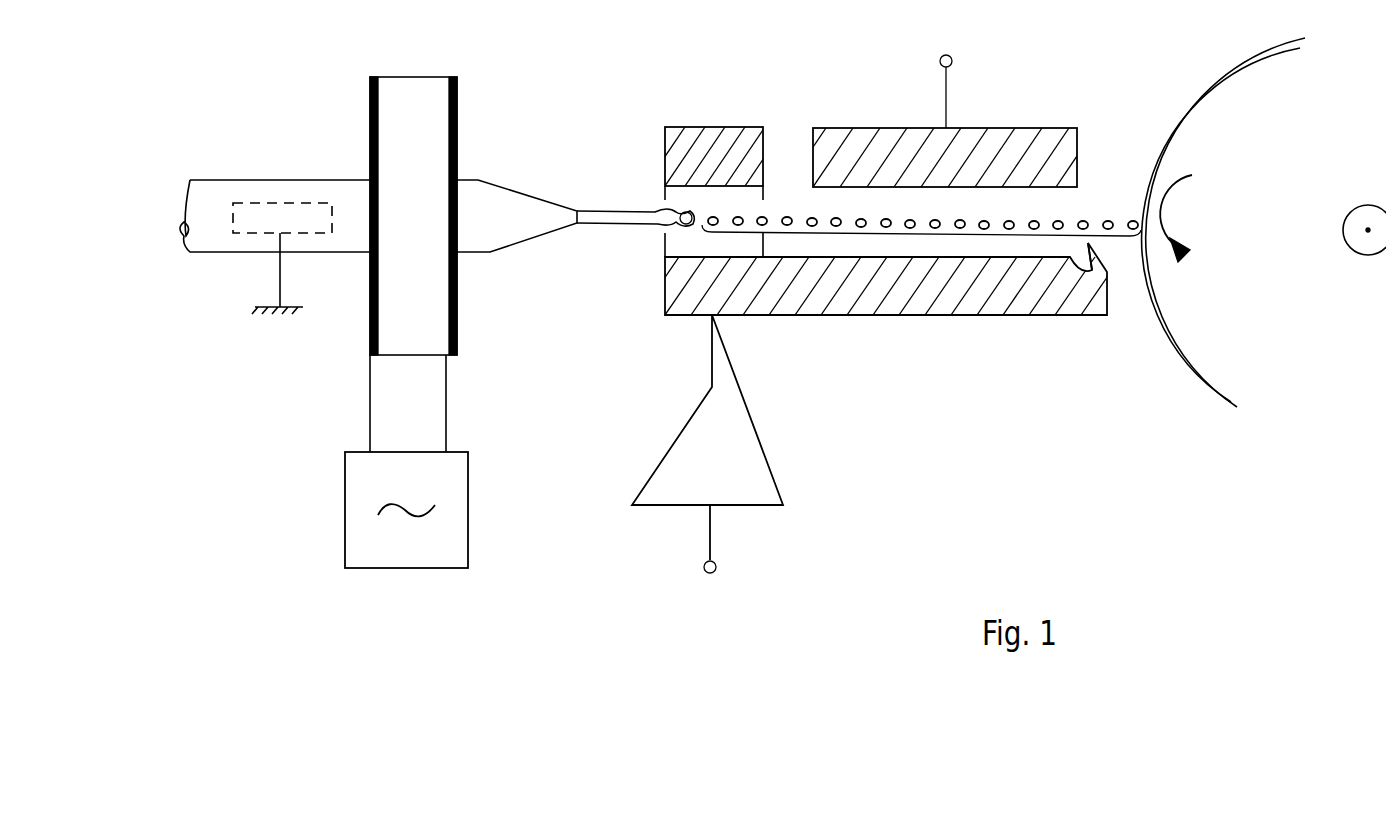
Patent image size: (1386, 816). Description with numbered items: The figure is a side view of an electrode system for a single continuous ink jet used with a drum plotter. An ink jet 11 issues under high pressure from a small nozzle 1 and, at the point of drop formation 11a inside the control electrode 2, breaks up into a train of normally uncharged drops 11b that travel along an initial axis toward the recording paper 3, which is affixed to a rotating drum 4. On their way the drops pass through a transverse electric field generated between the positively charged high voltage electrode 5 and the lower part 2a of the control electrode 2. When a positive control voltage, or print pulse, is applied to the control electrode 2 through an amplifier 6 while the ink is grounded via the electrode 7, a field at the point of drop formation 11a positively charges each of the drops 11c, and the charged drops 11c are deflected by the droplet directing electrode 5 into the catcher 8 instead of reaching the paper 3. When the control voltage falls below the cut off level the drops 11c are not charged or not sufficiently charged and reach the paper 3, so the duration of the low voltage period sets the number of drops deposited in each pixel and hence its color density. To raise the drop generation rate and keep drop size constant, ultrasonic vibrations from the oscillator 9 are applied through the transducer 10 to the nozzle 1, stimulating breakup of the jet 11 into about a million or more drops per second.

The nozzle 1 is at (547, 210).
The control electrode 2 is at (715, 135).
The lower part of the control electrode 2a is at (830, 307).
The recording paper 3 is at (1193, 115).
The rotating drum 4 is at (1235, 97).
The high voltage electrode 5 is at (993, 143).
The amplifier 6 is at (738, 465).
The electrode 7 is at (277, 208).
The catcher 8 is at (1090, 244).
The oscillator 9 is at (455, 489).
The transducer 10 is at (418, 87).
The ink jet 11 is at (600, 217).
The point of drop formation 11a is at (683, 225).
The train of drops 11b is at (912, 235).
The drops 11c is at (795, 213).